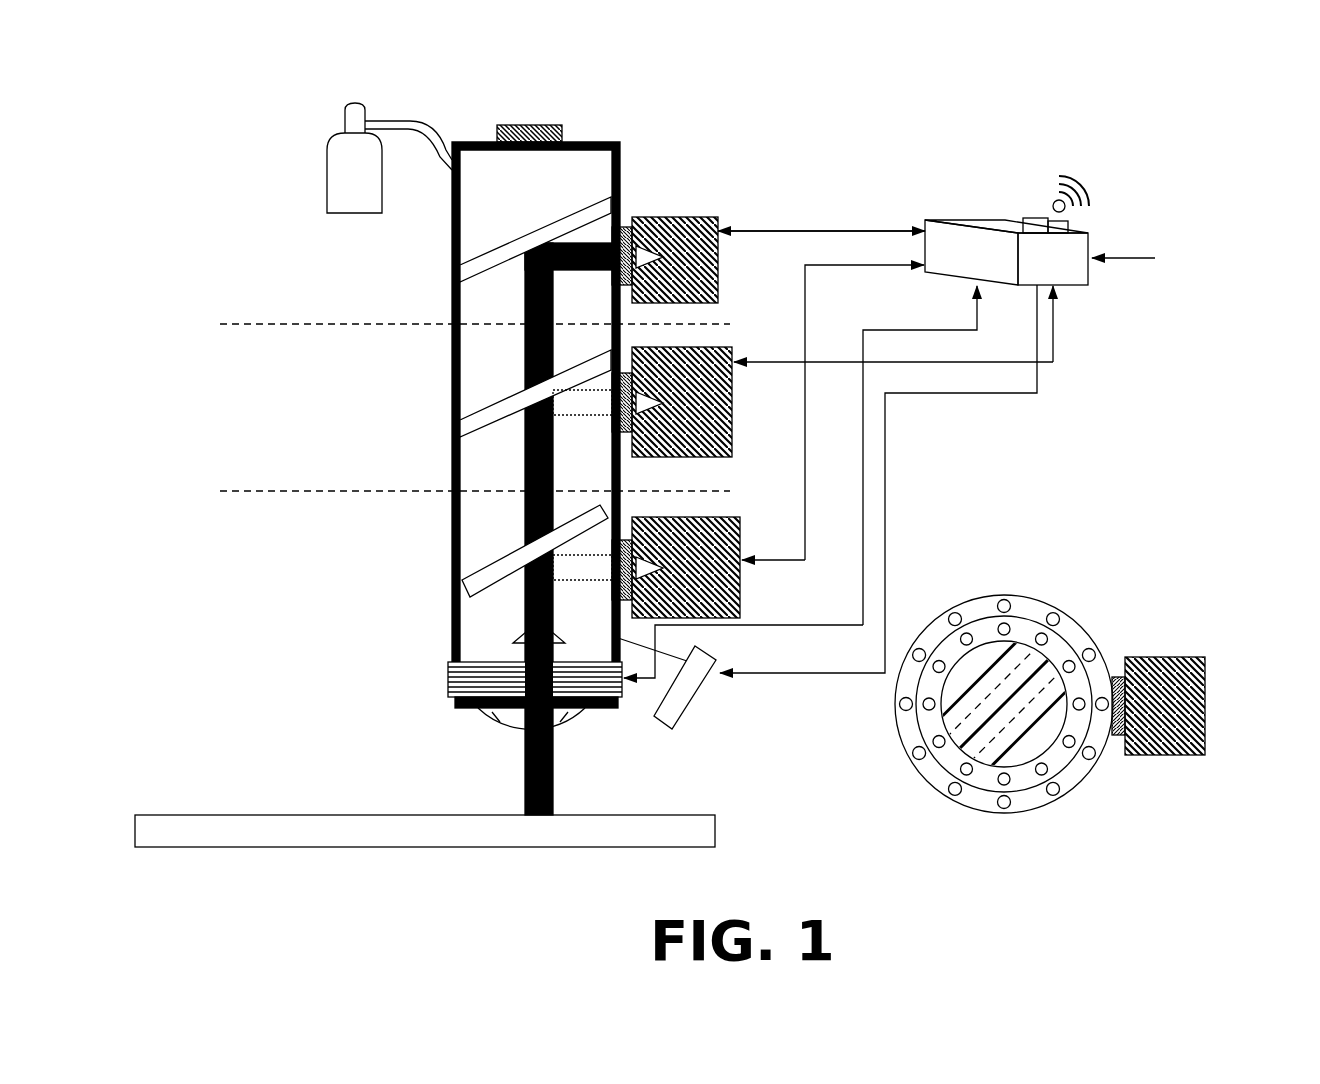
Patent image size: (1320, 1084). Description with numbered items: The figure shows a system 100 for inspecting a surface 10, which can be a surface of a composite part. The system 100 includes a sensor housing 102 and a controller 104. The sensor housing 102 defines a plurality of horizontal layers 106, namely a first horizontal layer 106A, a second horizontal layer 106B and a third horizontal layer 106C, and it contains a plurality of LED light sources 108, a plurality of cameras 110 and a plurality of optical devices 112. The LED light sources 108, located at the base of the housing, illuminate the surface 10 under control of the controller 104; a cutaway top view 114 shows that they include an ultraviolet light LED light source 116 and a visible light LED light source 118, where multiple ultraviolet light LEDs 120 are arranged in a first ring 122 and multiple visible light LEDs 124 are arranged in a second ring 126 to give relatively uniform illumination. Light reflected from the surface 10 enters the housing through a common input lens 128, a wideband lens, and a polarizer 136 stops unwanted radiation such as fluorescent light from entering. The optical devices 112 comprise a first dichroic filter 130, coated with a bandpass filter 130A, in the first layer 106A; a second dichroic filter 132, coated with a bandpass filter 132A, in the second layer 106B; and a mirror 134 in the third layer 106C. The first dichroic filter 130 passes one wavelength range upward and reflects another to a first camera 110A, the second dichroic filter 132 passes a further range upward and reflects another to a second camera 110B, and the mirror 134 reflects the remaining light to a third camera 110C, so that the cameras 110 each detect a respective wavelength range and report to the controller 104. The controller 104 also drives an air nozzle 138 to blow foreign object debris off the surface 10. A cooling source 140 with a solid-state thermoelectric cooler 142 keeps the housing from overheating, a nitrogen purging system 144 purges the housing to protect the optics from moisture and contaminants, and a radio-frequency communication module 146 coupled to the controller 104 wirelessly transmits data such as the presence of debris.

The system 100 is at (1252, 96).
The surface 10 is at (224, 813).
The sensor housing 102 is at (624, 166).
The controller 104 is at (960, 210).
The plurality of horizontal layers 106 is at (152, 272).
The first horizontal layer 106A is at (214, 557).
The second horizontal layer 106B is at (214, 396).
The third horizontal layer 106C is at (214, 268).
The plurality of LED light sources 108 is at (444, 668).
The plurality of cameras 110 is at (717, 199).
The first camera 110A is at (744, 524).
The second camera 110B is at (736, 431).
The third camera 110C is at (722, 290).
The plurality of optical devices 112 is at (480, 236).
The cutaway top view 114 is at (1114, 524).
The ultraviolet light LED light source 116 is at (1033, 801).
The visible light LED light source 118 is at (997, 590).
The ultraviolet light LEDs 120 is at (1073, 764).
The first ring 122 is at (983, 797).
The visible light LEDs 124 is at (1093, 652).
The second ring 126 is at (1036, 610).
The common input lens 128 is at (576, 738).
The first dichroic filter 130 is at (494, 571).
The bandpass filter 130A is at (485, 596).
The second dichroic filter 132 is at (470, 427).
The bandpass filter 132A is at (482, 446).
The mirror 134 is at (470, 267).
The polarizer 136 is at (444, 690).
The air nozzle 138 is at (694, 708).
The cooling source 140 is at (491, 122).
The solid-state thermoelectric cooler 142 is at (542, 122).
The nitrogen purging system 144 is at (324, 124).
The radio-frequency communication module 146 is at (1032, 216).